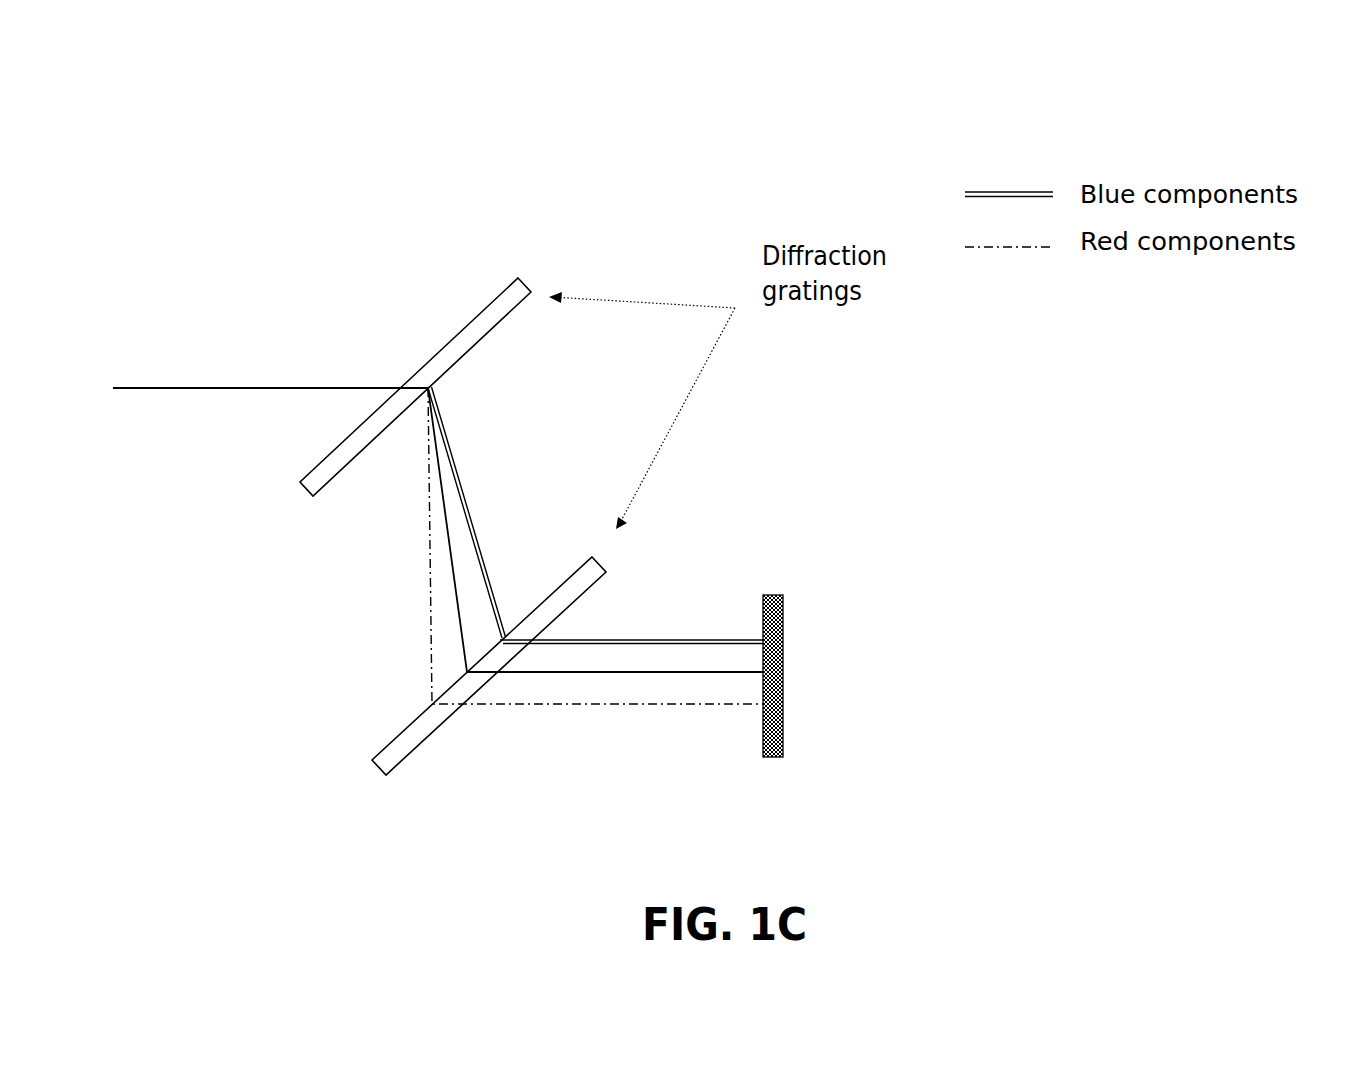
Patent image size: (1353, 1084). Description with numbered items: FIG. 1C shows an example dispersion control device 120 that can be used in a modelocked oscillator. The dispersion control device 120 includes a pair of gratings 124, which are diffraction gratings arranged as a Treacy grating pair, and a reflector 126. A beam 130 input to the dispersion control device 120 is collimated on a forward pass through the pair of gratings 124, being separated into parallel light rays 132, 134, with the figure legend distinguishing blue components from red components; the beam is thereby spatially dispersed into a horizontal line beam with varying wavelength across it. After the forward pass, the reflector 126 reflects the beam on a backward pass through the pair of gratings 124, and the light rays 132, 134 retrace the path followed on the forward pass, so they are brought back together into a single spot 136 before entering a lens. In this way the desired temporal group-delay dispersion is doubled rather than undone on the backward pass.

The dispersion control device 120 is at (213, 86).
The pair of gratings 124 is at (460, 327).
The reflector 126 is at (784, 684).
The beam 130 is at (262, 386).
The light ray 132 is at (690, 637).
The light ray 134 is at (610, 707).
The single spot 136 is at (429, 387).